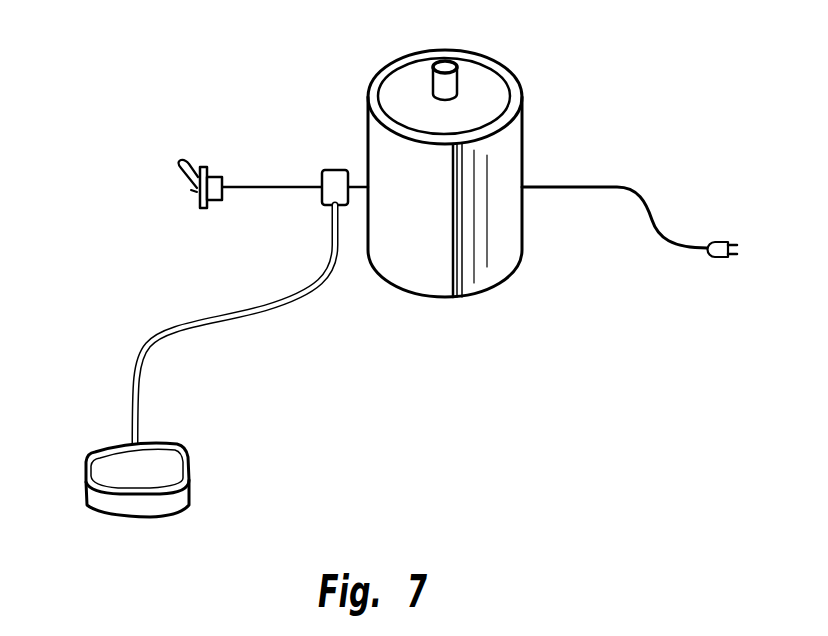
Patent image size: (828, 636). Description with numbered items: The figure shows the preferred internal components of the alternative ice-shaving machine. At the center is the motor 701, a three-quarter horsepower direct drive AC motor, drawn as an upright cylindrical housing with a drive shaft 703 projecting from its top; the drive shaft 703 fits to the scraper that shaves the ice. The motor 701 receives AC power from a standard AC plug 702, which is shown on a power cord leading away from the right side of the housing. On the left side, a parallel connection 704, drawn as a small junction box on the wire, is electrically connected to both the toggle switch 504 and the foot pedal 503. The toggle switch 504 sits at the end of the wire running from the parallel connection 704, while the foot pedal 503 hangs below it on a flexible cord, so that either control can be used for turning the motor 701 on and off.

The motor 701 is at (510, 162).
The AC plug 702 is at (642, 200).
The drive shaft 703 is at (455, 82).
The parallel connection 704 is at (330, 170).
The toggle switch 504 is at (197, 193).
The foot pedal 503 is at (165, 462).